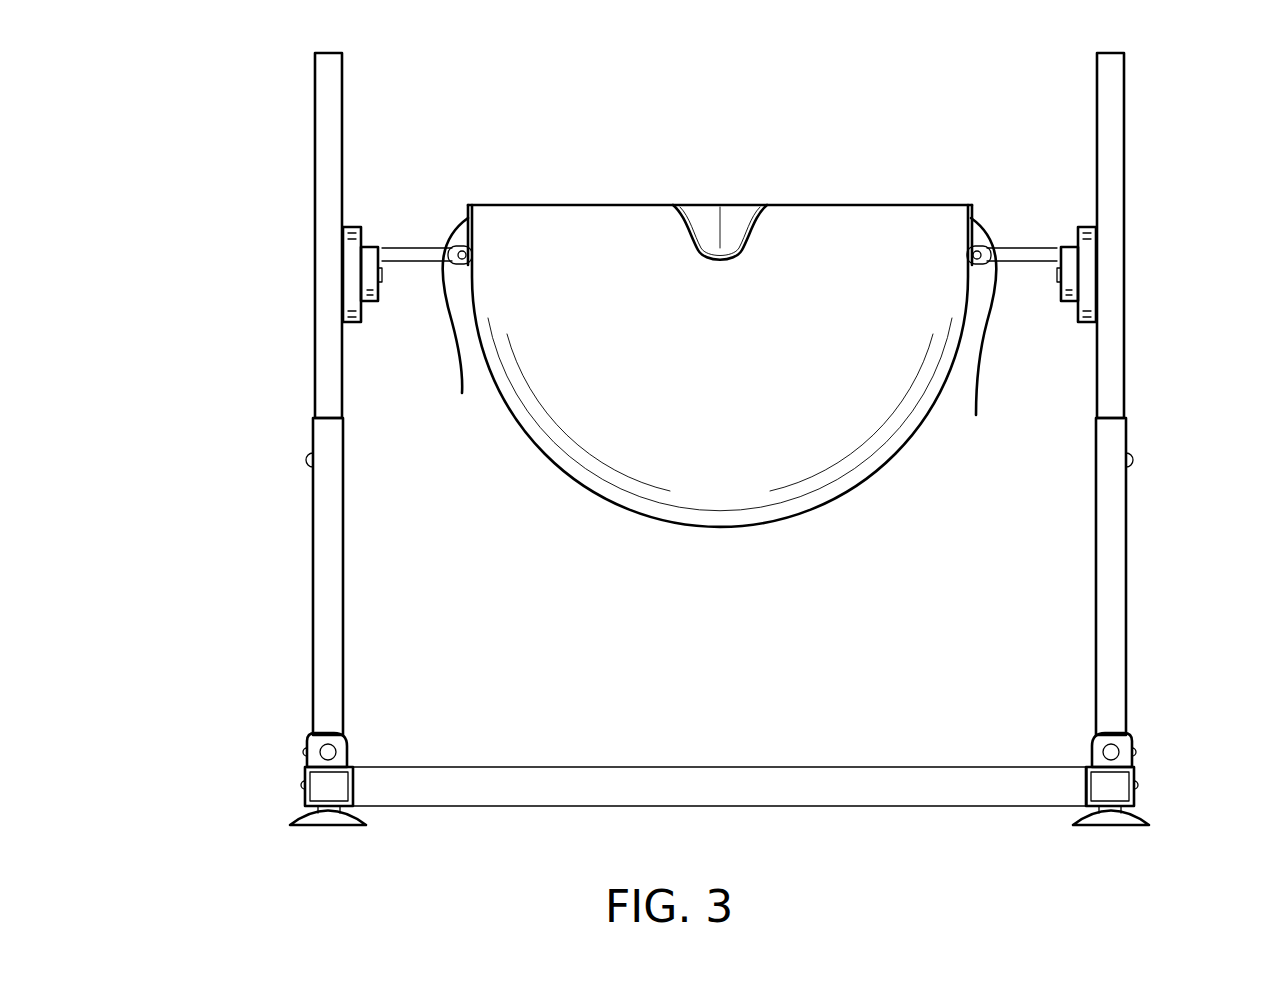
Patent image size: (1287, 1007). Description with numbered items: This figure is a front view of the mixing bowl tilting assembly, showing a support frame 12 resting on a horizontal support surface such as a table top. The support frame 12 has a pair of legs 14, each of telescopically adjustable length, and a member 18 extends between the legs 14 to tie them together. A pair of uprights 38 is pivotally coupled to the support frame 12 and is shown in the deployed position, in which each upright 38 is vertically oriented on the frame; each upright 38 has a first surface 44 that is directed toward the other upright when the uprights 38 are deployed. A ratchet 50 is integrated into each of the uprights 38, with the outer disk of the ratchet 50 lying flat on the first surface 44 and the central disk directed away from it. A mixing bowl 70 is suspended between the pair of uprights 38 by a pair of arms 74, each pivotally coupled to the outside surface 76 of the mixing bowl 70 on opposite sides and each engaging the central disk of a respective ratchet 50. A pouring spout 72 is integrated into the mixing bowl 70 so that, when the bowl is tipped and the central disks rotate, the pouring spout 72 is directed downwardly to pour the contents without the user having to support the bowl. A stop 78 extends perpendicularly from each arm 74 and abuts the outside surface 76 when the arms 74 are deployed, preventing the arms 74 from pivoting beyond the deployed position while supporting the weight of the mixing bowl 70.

The support frame 12 is at (1150, 718).
The legs 14 is at (310, 765).
The member 18 is at (570, 790).
The uprights 38 is at (313, 572).
The first surface 44 is at (342, 100).
The ratchets 50 is at (387, 305).
The mixing bowl 70 is at (719, 303).
The pouring spout 72 is at (745, 236).
The arms 74 is at (437, 245).
The outside surface 76 is at (560, 262).
The stops 78 is at (719, 336).